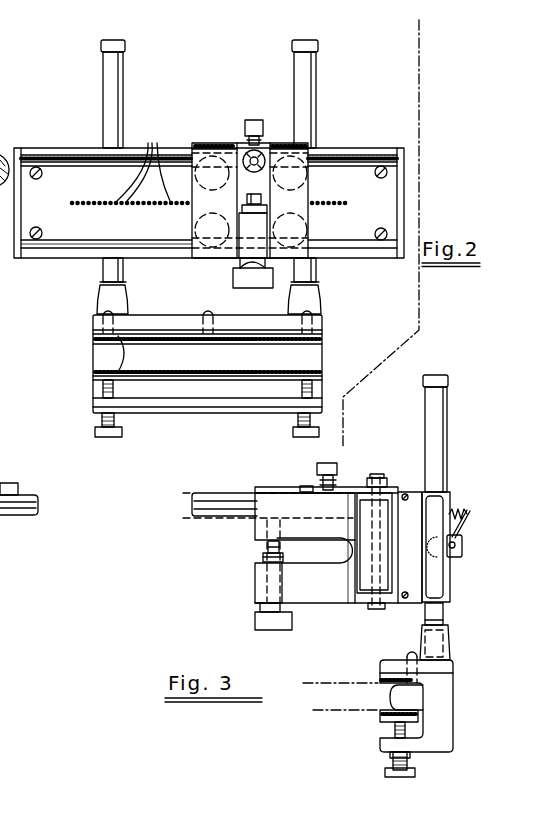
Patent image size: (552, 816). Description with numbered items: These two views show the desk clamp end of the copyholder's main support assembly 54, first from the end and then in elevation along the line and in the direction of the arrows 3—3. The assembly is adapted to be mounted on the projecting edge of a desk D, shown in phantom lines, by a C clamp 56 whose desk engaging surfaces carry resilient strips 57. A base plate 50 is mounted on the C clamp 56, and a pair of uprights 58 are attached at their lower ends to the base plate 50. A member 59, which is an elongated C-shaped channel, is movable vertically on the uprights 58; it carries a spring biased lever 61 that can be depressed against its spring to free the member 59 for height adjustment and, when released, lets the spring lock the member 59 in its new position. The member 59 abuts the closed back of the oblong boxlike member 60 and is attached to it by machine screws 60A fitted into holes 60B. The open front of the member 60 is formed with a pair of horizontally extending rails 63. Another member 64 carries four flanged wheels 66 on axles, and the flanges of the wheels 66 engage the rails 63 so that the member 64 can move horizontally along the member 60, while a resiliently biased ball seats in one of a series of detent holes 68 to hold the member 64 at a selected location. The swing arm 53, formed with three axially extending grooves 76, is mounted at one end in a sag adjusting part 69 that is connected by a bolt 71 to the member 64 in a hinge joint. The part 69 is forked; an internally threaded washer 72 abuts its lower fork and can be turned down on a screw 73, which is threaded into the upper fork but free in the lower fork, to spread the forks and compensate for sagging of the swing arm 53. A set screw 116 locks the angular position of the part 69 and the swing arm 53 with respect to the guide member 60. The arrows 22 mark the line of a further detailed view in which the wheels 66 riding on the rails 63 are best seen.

In FIG. 2, the arrows 3— 3 is at (395, 27).
In FIG. 2, the view arrows 22— 22 is at (253, 118).
In FIG. 2, the base plate 50 is at (324, 323).
In FIG. 3, the base plate 50 is at (447, 665).
In FIG. 2, the swing arm 53 is at (270, 142).
In FIG. 2, the main support assembly 54 is at (272, 74).
In FIG. 3, the main support assembly 54 is at (384, 425).
In FIG. 2, the C clamp 56 is at (332, 351).
In FIG. 3, the C clamp 56 is at (464, 692).
In FIG. 2, the resilient strips 57 is at (122, 349).
In FIG. 3, the resilient strips 57 is at (392, 697).
In FIG. 2, the uprights 58 is at (115, 79).
In FIG. 3, the uprights 58 is at (437, 402).
In FIG. 3, the member 59 is at (444, 571).
In FIG. 2, the oblong boxlike member 60 is at (379, 147).
In FIG. 3, the oblong boxlike member 60 is at (416, 484).
In FIG. 2, the machine screws 60A is at (380, 228).
In FIG. 2, the holes 60B is at (375, 174).
In FIG. 3, the spring biased lever 61 is at (471, 513).
In FIG. 2, the horizontally extending rails 63 is at (68, 165).
In FIG. 2, the member 64 is at (186, 216).
In FIG. 3, the member 64 is at (363, 566).
In FIG. 2, the flanged wheels 66 is at (313, 216).
In FIG. 2, the detent holes 68 is at (143, 163).
In FIG. 2, the sag adjusting part 69 is at (233, 248).
In FIG. 3, the sag adjusting part 69 is at (247, 596).
In FIG. 3, the bolt 71 is at (380, 476).
In FIG. 2, the internally threaded washer 72 is at (242, 209).
In FIG. 3, the internally threaded washer 72 is at (263, 556).
In FIG. 2, the screw 73 is at (246, 200).
In FIG. 3, the screw 73 is at (267, 547).
In FIG. 3, the axially extending grooves 76 is at (38, 493).
In FIG. 2, the set screw 116 is at (244, 126).
In FIG. 3, the set screw 116 is at (327, 462).
In FIG. 3, the desk D is at (345, 683).